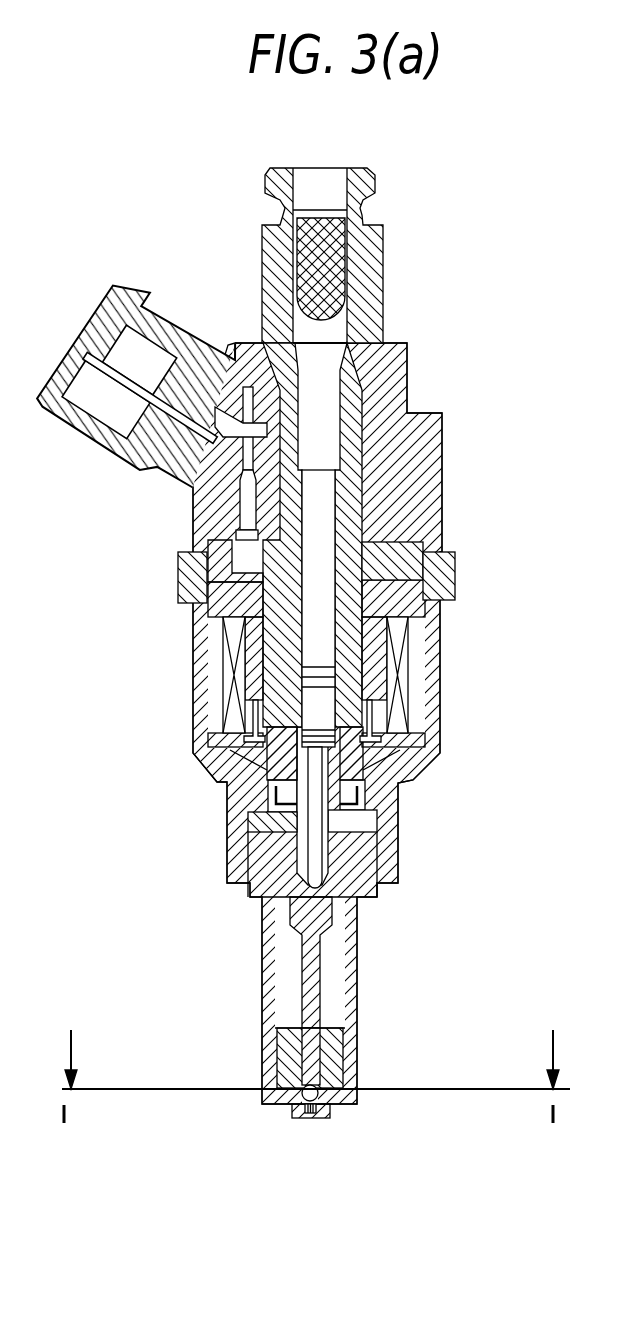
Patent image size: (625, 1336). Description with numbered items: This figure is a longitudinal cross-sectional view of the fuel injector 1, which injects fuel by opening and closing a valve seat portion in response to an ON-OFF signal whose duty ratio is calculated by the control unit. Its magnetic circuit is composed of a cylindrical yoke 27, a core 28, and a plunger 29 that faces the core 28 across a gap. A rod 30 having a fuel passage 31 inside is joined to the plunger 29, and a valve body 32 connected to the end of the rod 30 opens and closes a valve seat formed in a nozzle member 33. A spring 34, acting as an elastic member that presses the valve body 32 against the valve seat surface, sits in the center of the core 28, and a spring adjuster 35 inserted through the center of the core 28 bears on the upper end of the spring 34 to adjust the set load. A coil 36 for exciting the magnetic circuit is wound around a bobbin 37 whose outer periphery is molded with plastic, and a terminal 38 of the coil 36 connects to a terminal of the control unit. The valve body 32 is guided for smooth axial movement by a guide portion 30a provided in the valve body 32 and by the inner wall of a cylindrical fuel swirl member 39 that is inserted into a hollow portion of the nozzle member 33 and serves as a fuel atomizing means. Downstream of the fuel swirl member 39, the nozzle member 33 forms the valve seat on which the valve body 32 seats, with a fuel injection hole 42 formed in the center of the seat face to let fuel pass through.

The fuel injector 1 is at (403, 297).
The cylindrical yoke 27 is at (452, 577).
The core 28 is at (402, 547).
The plunger 29 is at (352, 770).
The rod 30 is at (337, 980).
The guide portion 30a is at (278, 843).
The fuel passage 31 is at (315, 860).
The valve body 32 is at (283, 1087).
The nozzle member 33 is at (350, 1060).
The spring 34 is at (335, 700).
The spring adjuster 35 is at (363, 490).
The coil 36 is at (230, 667).
The bobbin 37 is at (223, 598).
The terminal 38 is at (247, 507).
The cylindrical fuel swirl member 39 is at (287, 1025).
The fuel injection hole 42 is at (310, 1123).